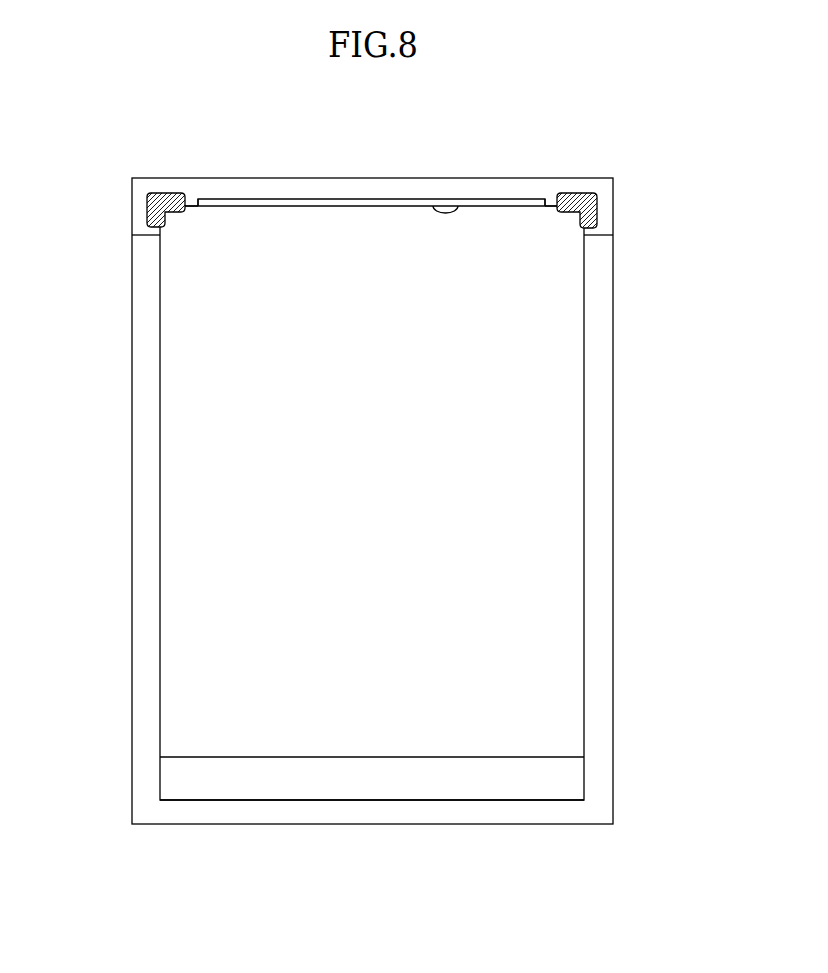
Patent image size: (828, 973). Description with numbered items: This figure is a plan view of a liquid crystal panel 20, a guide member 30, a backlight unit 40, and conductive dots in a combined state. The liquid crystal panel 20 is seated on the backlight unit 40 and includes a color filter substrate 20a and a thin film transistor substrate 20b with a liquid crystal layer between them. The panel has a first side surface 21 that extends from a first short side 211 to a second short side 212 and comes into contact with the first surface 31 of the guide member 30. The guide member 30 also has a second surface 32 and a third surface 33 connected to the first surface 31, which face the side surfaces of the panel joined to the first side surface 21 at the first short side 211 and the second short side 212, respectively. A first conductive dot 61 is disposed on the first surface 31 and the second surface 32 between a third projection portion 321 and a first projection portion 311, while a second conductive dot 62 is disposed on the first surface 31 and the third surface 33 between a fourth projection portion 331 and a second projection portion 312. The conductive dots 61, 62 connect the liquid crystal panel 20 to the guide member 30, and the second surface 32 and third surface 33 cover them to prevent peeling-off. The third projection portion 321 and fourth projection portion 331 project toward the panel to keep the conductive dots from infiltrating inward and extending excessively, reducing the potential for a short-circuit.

The liquid crystal panel 20 is at (422, 867).
The color filter substrate 20a is at (417, 748).
The thin film transistor substrate 20b is at (360, 779).
The first side surface 21 is at (313, 206).
The guide member 30 is at (372, 187).
The first surface 31 is at (460, 199).
The first projection portion 311 is at (190, 205).
The second projection portion 312 is at (548, 205).
The second surface 32 is at (147, 217).
The third projection portion 321 is at (147, 235).
The third surface 33 is at (597, 217).
The fourth projection portion 331 is at (598, 235).
The first conductive dot 61 is at (150, 205).
The second conductive dot 62 is at (593, 205).
The first short side 211 is at (161, 203).
The second short side 212 is at (585, 200).
The backlight unit 40 is at (226, 824).